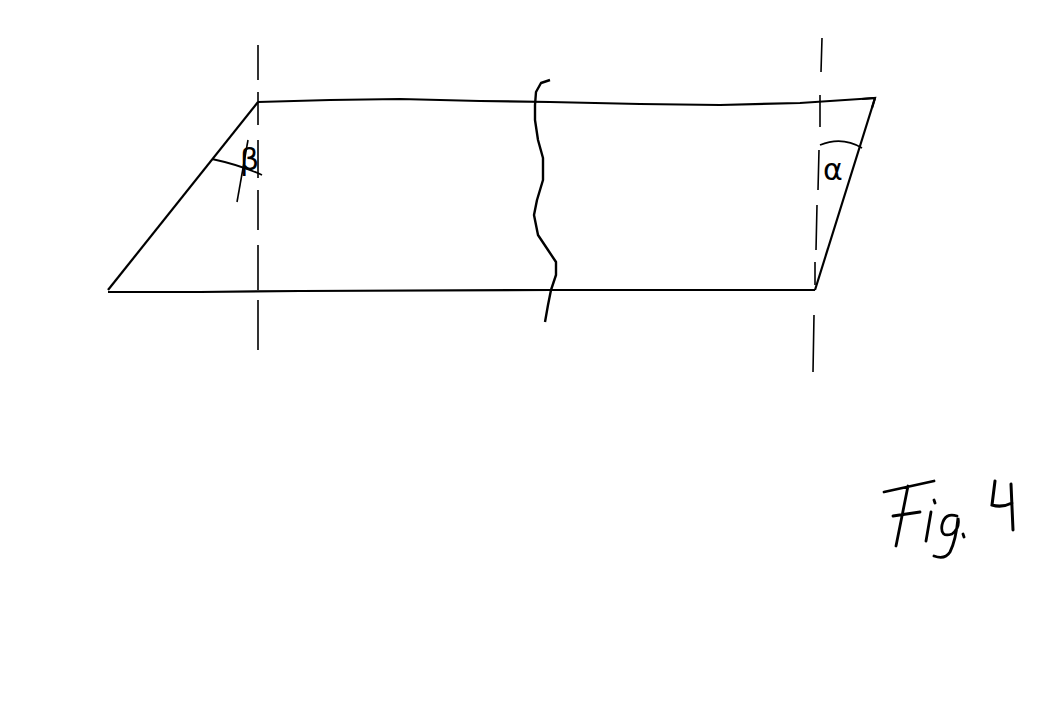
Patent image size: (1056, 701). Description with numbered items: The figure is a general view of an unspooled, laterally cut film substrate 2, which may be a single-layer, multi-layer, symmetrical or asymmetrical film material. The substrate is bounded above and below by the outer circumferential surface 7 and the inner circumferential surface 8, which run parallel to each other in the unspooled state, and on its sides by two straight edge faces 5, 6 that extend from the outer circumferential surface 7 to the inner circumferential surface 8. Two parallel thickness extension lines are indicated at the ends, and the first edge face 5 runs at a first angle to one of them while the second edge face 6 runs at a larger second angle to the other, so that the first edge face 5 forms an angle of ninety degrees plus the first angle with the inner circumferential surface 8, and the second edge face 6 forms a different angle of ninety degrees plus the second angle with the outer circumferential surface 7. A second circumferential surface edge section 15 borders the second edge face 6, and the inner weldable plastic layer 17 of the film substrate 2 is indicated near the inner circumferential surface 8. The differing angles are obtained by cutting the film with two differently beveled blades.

The film substrate 2 is at (402, 128).
The first edge face 5 is at (852, 190).
The second edge face 6 is at (165, 210).
The outer circumferential surface 7 is at (635, 107).
The inner circumferential surface 8 is at (610, 290).
The second circumferential surface edge section 15 is at (845, 125).
The inner weldable plastic layer 17 is at (173, 268).